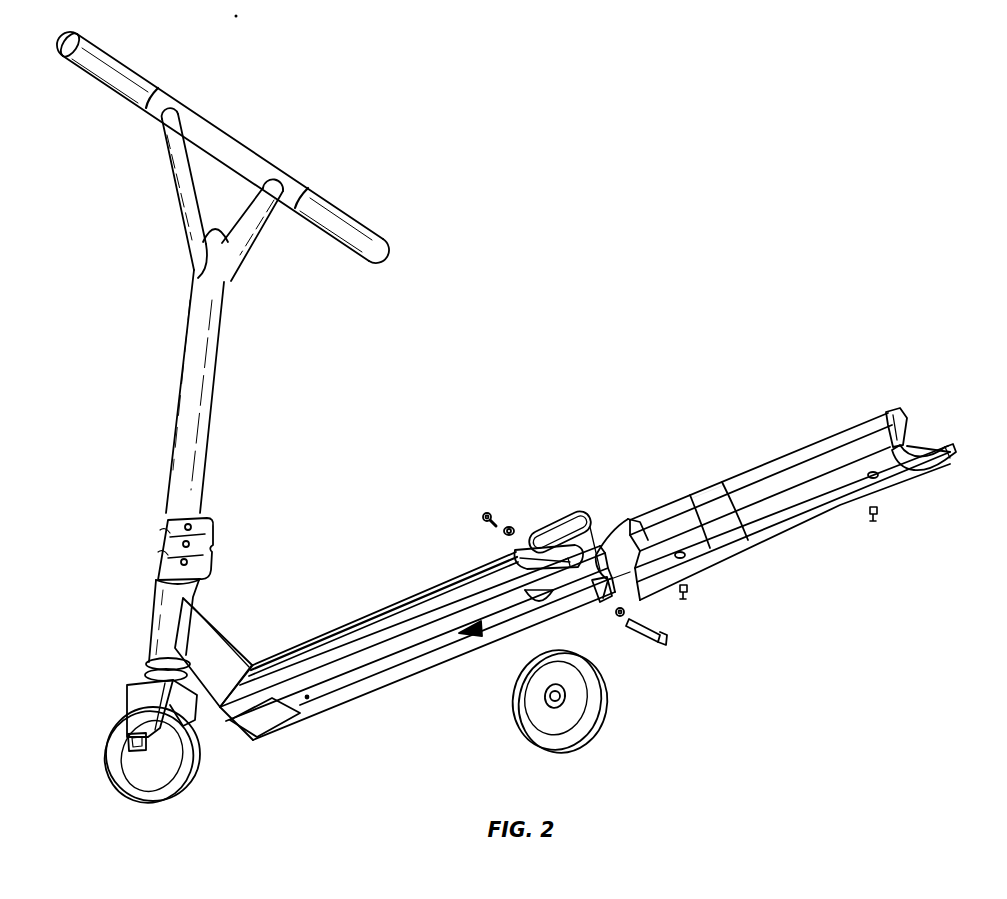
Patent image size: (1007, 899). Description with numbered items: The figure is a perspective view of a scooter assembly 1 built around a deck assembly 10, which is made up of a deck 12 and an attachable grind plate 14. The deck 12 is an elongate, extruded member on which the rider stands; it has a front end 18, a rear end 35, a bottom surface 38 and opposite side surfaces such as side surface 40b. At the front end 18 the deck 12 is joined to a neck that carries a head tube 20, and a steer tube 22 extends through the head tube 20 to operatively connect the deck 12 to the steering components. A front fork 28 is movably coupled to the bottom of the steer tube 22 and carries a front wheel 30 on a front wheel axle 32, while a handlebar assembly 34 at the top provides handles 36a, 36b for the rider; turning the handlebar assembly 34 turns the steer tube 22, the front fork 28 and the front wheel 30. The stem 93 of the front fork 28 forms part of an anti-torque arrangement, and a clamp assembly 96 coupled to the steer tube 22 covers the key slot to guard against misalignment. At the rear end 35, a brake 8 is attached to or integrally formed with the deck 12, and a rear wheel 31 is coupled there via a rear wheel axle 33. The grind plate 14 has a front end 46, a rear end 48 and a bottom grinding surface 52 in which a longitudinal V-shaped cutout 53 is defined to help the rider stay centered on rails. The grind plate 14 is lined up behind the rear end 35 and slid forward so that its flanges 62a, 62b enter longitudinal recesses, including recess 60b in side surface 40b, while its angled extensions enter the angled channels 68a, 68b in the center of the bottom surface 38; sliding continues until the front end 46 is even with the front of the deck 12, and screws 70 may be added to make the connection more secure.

The scooter assembly 1 is at (750, 152).
The brake 8 is at (570, 510).
The deck assembly 10 is at (620, 470).
The deck 12 is at (387, 605).
The grind plate 14 is at (750, 472).
The front end 18 is at (260, 660).
The head tube 20 is at (158, 622).
The steer tube 22 is at (190, 402).
The front fork 28 is at (140, 703).
The front wheel 30 is at (170, 777).
The rear wheel 31 is at (597, 700).
The front wheel axle 32 is at (132, 742).
The rear wheel axle 33 is at (648, 628).
The handlebar assembly 34 is at (166, 207).
The rear end 35 is at (597, 560).
The handle 36a is at (340, 222).
The handle 36b is at (117, 68).
The bottom surface 38 is at (323, 697).
The side surface 40b is at (337, 633).
The front end 46 is at (612, 600).
The rear end 48 is at (920, 480).
The grinding surface 52 is at (790, 523).
The V-shaped cutout 53 is at (887, 474).
The longitudinal recess 60b is at (452, 582).
The flange 62a is at (952, 450).
The flange 62b is at (903, 417).
The angled channel 68a is at (465, 638).
The angled channel 68b is at (403, 650).
The screw 70 is at (682, 600).
The stem 93 is at (147, 673).
The clamp assembly 96 is at (168, 547).